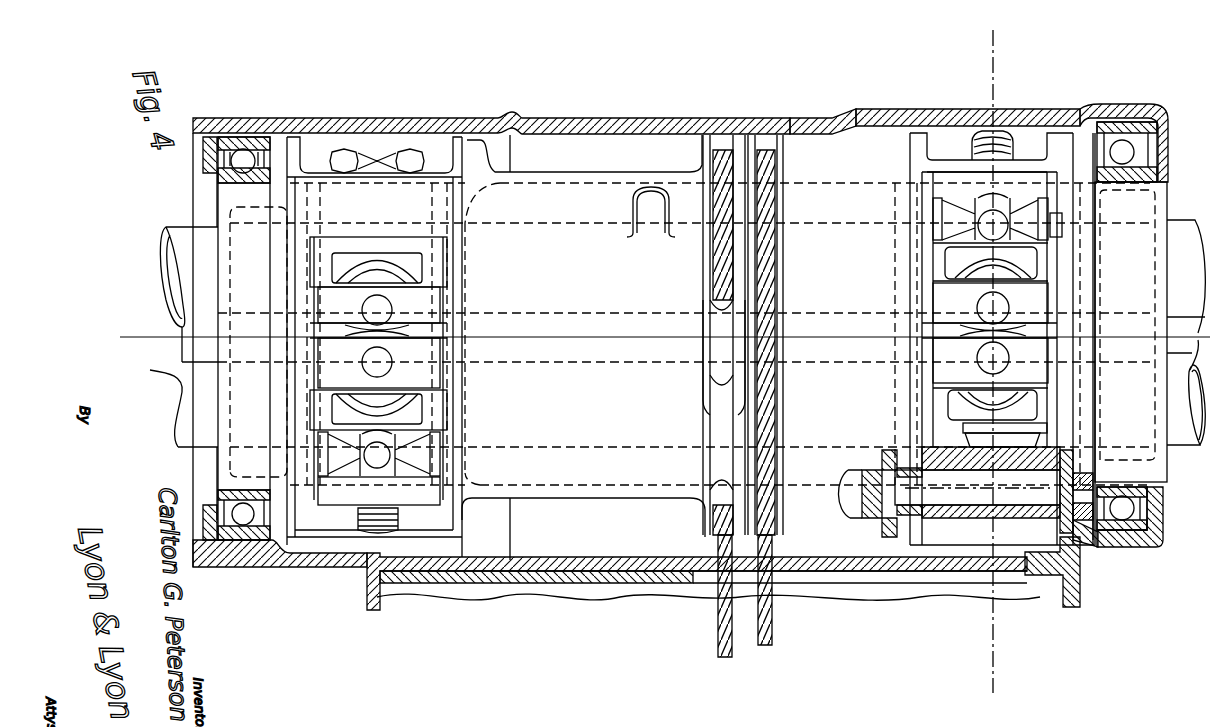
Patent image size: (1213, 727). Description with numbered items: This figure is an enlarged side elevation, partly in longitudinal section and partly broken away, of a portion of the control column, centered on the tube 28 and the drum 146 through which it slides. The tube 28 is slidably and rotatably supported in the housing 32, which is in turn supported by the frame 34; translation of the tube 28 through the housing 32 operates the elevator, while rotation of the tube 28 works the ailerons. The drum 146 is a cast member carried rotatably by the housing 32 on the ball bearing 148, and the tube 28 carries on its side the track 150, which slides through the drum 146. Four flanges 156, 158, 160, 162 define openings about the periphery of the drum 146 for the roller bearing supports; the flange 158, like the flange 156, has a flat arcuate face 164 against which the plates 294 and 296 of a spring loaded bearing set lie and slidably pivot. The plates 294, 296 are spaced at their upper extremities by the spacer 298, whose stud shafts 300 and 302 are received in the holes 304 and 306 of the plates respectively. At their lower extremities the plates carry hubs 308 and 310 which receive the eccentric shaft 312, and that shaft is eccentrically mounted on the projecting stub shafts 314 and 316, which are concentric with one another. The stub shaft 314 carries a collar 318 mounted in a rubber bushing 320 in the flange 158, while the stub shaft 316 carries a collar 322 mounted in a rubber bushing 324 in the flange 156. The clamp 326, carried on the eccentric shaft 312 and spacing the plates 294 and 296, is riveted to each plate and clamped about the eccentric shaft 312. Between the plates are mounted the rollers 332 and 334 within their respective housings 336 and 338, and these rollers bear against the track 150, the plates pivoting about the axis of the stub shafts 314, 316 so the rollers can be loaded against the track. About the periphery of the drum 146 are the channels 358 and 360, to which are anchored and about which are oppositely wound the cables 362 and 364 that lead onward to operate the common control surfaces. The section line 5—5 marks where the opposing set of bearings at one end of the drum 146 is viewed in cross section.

The tube 28 is at (172, 383).
The housing 32 is at (603, 120).
The frame 34 is at (367, 600).
The drum 146 is at (806, 131).
The ball bearing 148 is at (244, 155).
The track 150 is at (200, 325).
The flange 156 is at (1082, 138).
The flange 158 is at (888, 132).
The flange 160 is at (458, 522).
The flange 162 is at (300, 527).
The arcuate face 164 is at (918, 253).
The plate 294 is at (965, 406).
The plate 296 is at (1055, 398).
The spacer 298 is at (962, 213).
The stud shaft 300 is at (930, 226).
The stud shaft 302 is at (1055, 223).
The hole 304 is at (928, 202).
The hole 306 is at (1053, 213).
The hub 308 is at (912, 498).
The hub 310 is at (1036, 522).
The eccentric shaft 312 is at (958, 498).
The stub shaft 314 is at (880, 460).
The stub shaft 316 is at (1087, 518).
The collar 318 is at (842, 532).
The rubber bushing 320 is at (912, 462).
The collar 322 is at (1083, 520).
The rubber bushing 324 is at (1060, 470).
The clamp 326 is at (983, 505).
The roller 332 is at (962, 268).
The roller 334 is at (960, 428).
The housing 336 is at (950, 298).
The housing 338 is at (950, 372).
The channel 358 is at (720, 128).
The channel 360 is at (768, 132).
The cable 362 is at (716, 626).
The cable 364 is at (758, 635).
The line 5— 5 is at (993, 38).